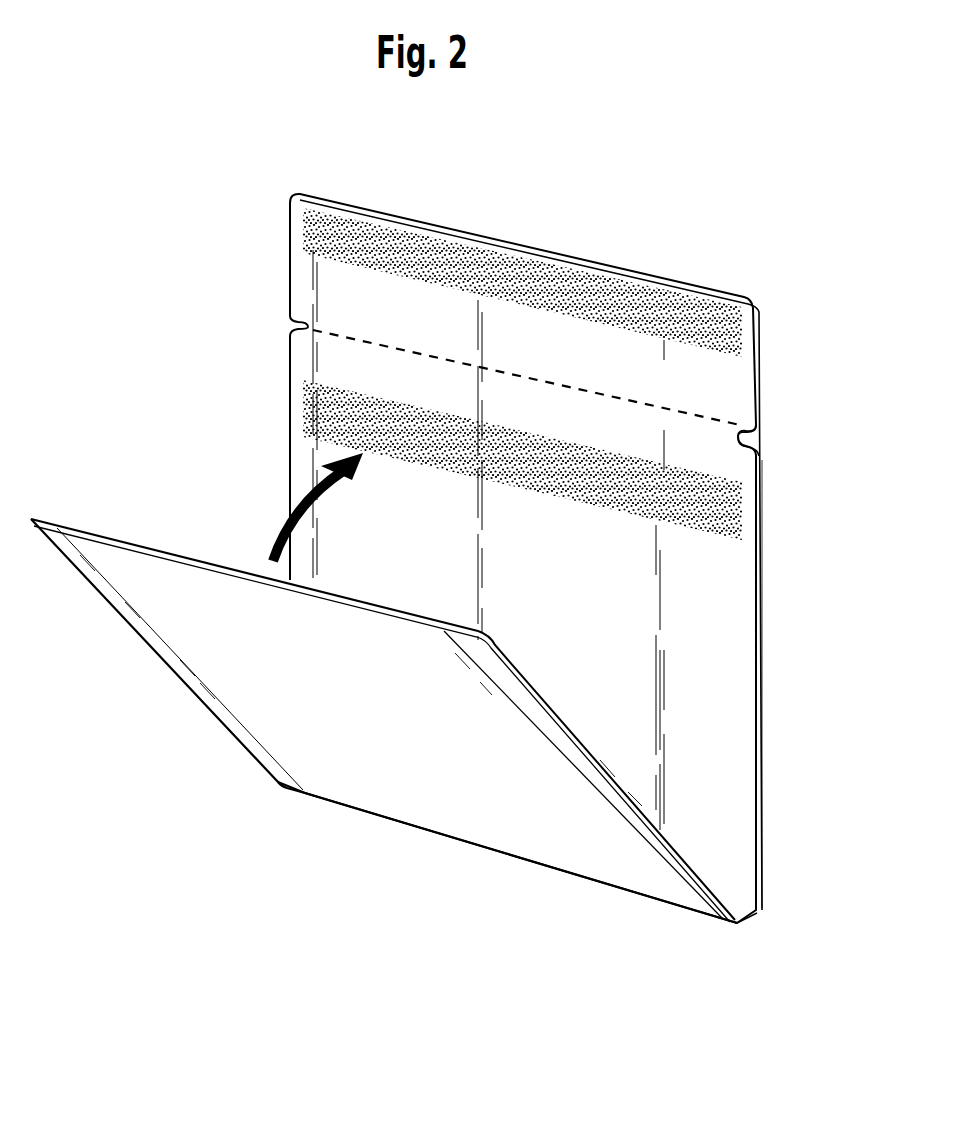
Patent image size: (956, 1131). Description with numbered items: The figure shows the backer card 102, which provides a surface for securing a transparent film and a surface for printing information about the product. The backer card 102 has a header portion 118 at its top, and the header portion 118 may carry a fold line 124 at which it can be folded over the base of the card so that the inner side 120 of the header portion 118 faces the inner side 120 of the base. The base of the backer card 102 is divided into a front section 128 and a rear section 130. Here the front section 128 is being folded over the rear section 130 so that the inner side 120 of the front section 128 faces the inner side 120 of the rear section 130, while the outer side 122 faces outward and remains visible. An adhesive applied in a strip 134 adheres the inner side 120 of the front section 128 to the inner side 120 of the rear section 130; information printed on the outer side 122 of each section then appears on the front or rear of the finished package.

The backer card 102 is at (522, 246).
The header portion 118 is at (665, 283).
The inner side 120 is at (565, 619).
The outer side 122 is at (459, 725).
The fold line 124 is at (748, 432).
The front section 128 is at (200, 655).
The rear section 130 is at (760, 612).
The strip 134 is at (318, 422).